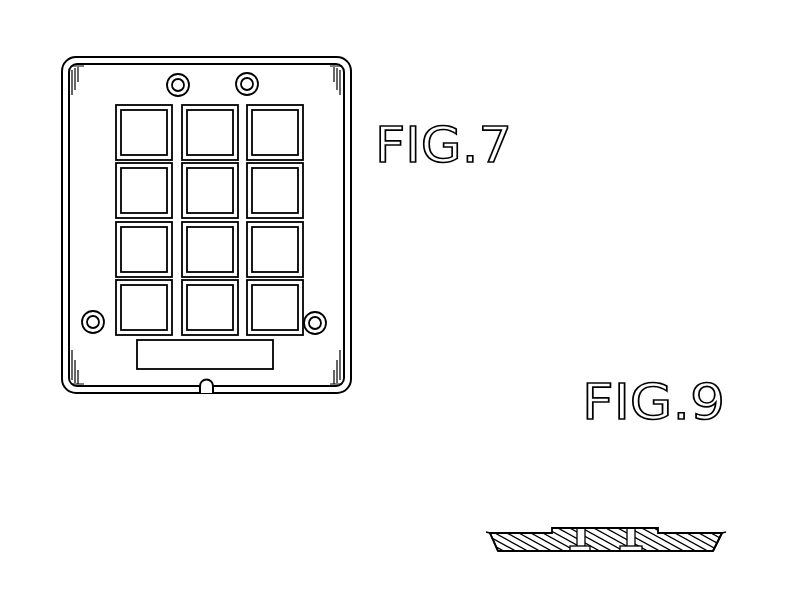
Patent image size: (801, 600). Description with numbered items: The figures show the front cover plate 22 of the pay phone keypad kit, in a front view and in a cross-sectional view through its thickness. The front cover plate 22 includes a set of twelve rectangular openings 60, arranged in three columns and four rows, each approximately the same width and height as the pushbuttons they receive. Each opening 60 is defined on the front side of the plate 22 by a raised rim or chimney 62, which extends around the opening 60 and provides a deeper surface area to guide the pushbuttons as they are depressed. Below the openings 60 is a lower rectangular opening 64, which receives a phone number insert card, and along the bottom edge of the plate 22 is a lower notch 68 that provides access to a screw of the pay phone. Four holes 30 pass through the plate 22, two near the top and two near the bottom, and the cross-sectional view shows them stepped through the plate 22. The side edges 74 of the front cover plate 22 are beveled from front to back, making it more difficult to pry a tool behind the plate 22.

In FIG. 9, the front cover plate 22 is at (612, 500).
In FIG. 7, the screw holes 30 is at (240, 76).
In FIG. 9, the screw holes 30 is at (632, 528).
In FIG. 7, the rectangular openings 60 is at (212, 202).
In FIG. 7, the raised rim or chimney 62 is at (132, 270).
In FIG. 7, the lower rectangular opening 64 is at (186, 366).
In FIG. 7, the lower notch 68 is at (203, 388).
In FIG. 9, the side edges 74 is at (492, 536).